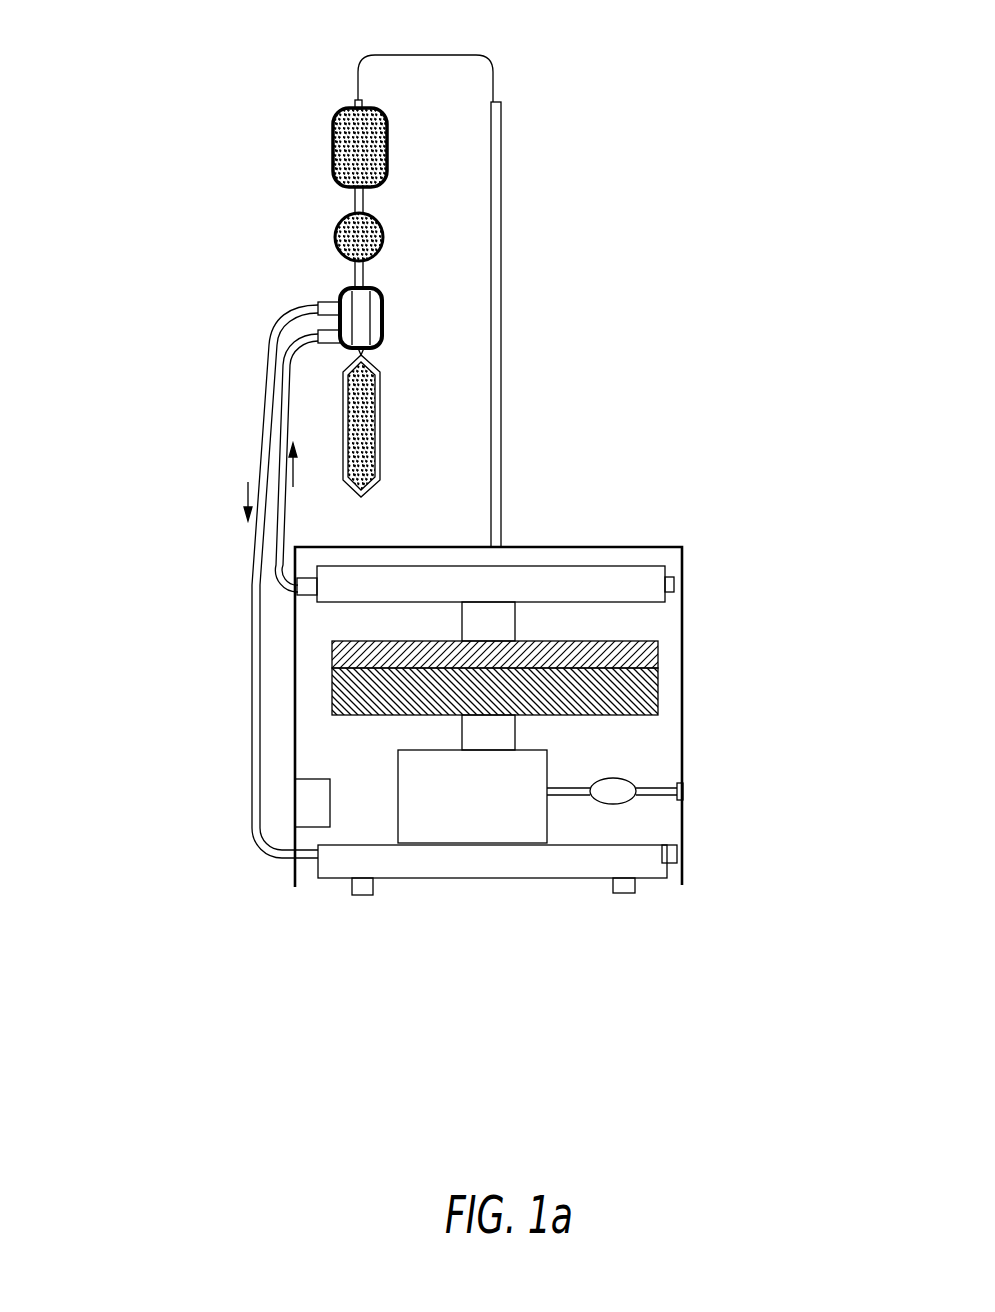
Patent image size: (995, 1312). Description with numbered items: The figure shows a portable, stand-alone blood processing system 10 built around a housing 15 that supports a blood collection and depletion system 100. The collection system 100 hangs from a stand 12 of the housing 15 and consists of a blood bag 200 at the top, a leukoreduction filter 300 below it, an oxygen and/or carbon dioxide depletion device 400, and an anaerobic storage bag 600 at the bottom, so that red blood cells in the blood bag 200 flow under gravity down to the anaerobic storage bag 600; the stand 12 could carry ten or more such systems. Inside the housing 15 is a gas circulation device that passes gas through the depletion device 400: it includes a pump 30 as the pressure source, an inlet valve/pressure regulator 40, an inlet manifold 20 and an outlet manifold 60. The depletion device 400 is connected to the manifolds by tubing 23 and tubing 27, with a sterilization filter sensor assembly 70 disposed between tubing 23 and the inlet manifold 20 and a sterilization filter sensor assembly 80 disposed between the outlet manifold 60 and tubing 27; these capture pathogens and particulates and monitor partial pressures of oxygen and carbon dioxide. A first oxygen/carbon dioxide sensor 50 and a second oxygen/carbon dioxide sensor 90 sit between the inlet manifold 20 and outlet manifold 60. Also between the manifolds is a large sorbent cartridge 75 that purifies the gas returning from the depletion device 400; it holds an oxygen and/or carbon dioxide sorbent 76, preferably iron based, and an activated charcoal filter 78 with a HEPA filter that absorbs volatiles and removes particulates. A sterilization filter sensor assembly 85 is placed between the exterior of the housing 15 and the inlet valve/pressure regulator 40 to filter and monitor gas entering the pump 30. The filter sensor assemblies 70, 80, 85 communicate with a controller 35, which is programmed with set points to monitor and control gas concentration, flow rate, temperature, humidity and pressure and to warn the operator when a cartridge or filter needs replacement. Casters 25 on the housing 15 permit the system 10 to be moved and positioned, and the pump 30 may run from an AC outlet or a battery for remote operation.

The blood processing system 10 is at (612, 68).
The stand 12 is at (498, 225).
The blood collection and depletion system 100 is at (229, 479).
The blood bag 200 is at (333, 143).
The leukoreduction filter 300 is at (328, 237).
The oxygen and/or carbon dioxide depletion (OCDD) device 400 is at (342, 293).
The anaerobic storage bag 600 is at (328, 413).
The tubing 23 is at (272, 337).
The tubing 27 is at (280, 428).
The outlet manifold 60 is at (612, 583).
The sterilization filter sensor assembly 80 is at (298, 588).
The second oxygen/carbon dioxide sensor 90 is at (497, 627).
The activated charcoal filter 78 is at (332, 650).
The sorbent cartridge 75 is at (466, 678).
The oxygen and/or carbon dioxide sorbent 76 is at (637, 687).
The first oxygen/carbon dioxide sensor 50 is at (462, 733).
The pump 30 is at (520, 763).
The controller 35 is at (316, 806).
The inlet valve/pressure regulator 40 is at (625, 797).
The sterilization filter sensor assembly 85 is at (683, 793).
The housing 15 is at (683, 765).
The inlet manifold 20 is at (525, 858).
The casters 25 is at (360, 890).
The sterilization filter sensor assembly 70 is at (310, 860).